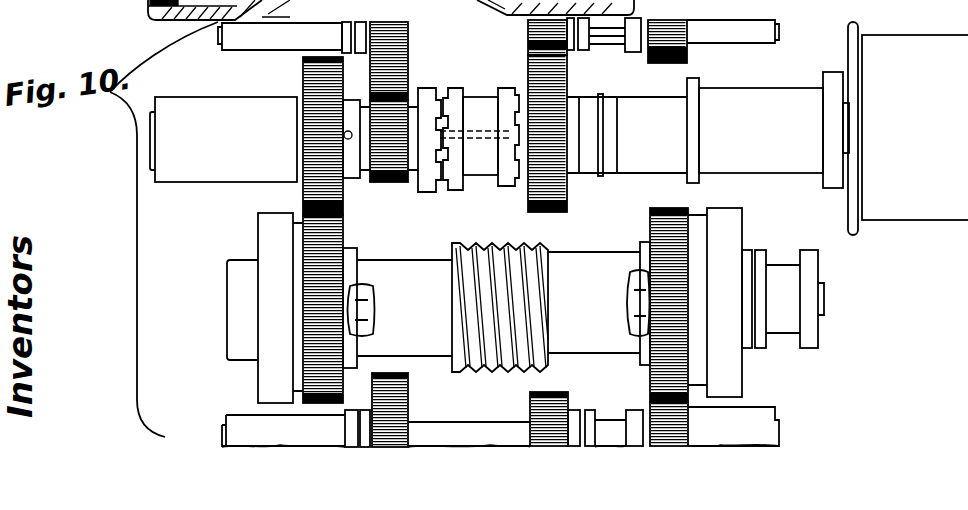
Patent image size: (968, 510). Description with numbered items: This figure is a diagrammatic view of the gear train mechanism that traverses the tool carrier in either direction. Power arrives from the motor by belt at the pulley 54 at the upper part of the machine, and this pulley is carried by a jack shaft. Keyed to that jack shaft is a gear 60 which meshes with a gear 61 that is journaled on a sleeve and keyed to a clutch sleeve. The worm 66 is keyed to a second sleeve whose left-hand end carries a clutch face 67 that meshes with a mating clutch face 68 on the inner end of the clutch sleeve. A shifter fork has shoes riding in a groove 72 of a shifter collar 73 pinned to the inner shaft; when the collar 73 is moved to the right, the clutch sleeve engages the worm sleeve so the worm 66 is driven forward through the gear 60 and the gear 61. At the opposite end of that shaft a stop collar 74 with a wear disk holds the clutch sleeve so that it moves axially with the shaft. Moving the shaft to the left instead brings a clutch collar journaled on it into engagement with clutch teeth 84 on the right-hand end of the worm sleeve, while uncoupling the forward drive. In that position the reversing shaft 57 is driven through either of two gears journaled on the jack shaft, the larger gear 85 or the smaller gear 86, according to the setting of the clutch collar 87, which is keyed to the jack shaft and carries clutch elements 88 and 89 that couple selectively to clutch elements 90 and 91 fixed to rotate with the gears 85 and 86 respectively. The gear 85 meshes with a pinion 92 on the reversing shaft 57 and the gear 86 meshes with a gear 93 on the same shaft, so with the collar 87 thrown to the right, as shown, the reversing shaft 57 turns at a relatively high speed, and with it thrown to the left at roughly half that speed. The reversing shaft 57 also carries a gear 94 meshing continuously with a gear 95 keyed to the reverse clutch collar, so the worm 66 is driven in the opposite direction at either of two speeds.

The pulley 54 is at (915, 127).
The reversing shaft 57 is at (762, 418).
The gear 60 is at (302, 80).
The gear 61 is at (313, 243).
The worm 66 is at (463, 262).
The clutch face 67 is at (368, 308).
The mating clutch face 68 is at (360, 287).
The groove 72 is at (775, 262).
The shifter collar 73 is at (810, 333).
The stop collar 74 is at (742, 0).
The clutch teeth 84 is at (633, 308).
The gear 85 is at (565, 210).
The gear 86 is at (393, 181).
The clutch collar 87 is at (480, 136).
The clutch element 88 is at (503, 93).
The clutch element 89 is at (453, 93).
The clutch element 90 is at (520, 113).
The clutch element 91 is at (423, 97).
The pinion 92 is at (570, 43).
The gear 93 is at (373, 33).
The gear 94 is at (687, 57).
The gear 95 is at (688, 208).